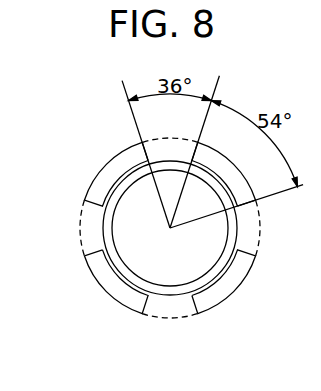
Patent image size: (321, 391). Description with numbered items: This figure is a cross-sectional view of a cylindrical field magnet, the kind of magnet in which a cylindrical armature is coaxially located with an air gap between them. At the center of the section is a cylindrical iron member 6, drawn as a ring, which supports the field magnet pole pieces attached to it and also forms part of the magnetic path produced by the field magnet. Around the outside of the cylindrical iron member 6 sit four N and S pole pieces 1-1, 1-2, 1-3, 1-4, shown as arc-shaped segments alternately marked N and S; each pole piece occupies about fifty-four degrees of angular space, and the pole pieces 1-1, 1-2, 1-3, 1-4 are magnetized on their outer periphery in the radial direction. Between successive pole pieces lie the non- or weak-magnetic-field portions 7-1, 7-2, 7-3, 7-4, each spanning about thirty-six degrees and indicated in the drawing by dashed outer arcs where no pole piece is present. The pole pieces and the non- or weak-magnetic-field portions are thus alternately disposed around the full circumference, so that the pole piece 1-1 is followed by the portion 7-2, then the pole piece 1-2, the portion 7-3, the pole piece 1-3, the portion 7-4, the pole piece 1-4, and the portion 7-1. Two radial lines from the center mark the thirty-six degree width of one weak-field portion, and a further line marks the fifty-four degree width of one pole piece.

The cylindrical iron member 6 is at (213, 187).
The pole piece 1-1 is at (207, 150).
The pole piece 1-2 is at (238, 279).
The pole piece 1-3 is at (122, 306).
The pole piece 1-4 is at (128, 155).
The non- or weak-magnetic-field portion 7-1 is at (157, 146).
The non- or weak-magnetic-field portion 7-2 is at (250, 233).
The non- or weak-magnetic-field portion 7-3 is at (170, 312).
The non- or weak-magnetic-field portion 7-4 is at (95, 228).